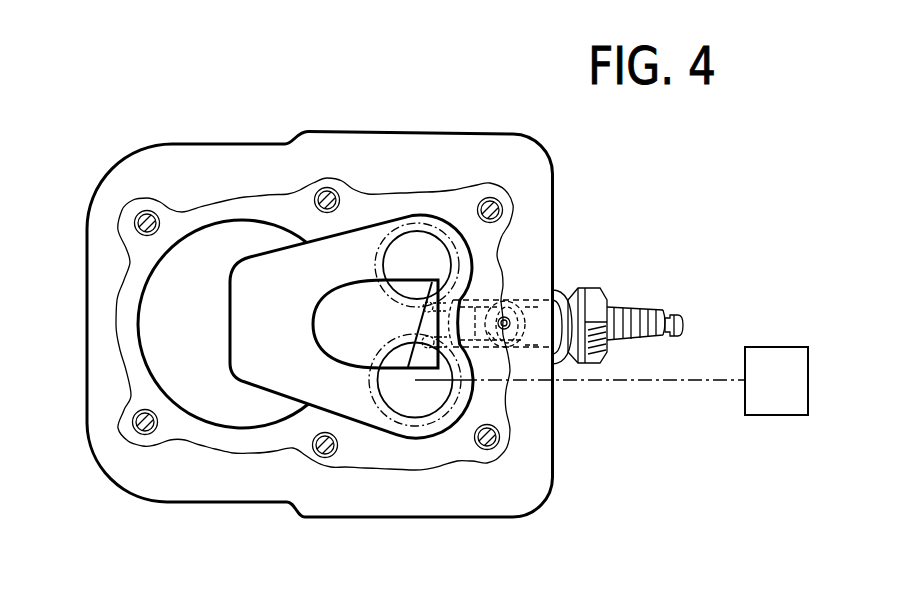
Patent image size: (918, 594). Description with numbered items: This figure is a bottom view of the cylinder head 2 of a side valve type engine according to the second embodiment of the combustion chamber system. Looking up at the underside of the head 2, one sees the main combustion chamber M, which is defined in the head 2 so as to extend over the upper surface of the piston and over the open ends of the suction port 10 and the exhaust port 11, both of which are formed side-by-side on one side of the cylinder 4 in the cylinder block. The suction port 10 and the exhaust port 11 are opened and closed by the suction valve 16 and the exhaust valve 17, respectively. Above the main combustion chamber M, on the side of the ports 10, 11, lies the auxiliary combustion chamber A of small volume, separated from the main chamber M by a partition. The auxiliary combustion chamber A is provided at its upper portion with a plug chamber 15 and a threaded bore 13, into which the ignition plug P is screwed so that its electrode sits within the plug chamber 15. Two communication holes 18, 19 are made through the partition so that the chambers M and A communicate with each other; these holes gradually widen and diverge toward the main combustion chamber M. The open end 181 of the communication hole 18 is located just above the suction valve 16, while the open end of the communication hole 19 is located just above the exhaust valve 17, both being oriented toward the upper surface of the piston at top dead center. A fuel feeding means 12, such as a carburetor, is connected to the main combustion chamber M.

The cylinder head 2 is at (391, 193).
The cylinder 4 is at (509, 301).
The main combustion chamber M is at (283, 336).
The suction port 10 is at (437, 404).
The exhaust port 11 is at (439, 243).
The fuel feeding means 12 is at (792, 398).
The threaded bore 13 is at (540, 300).
The plug chamber 15 is at (512, 345).
The suction valve 16 is at (370, 388).
The exhaust valve 17 is at (381, 260).
The communication hole 18 is at (491, 343).
The open end of communication hole 18 181 is at (425, 347).
The communication hole 19 is at (427, 301).
The auxiliary combustion chamber A is at (475, 305).
The ignition plug P is at (643, 308).